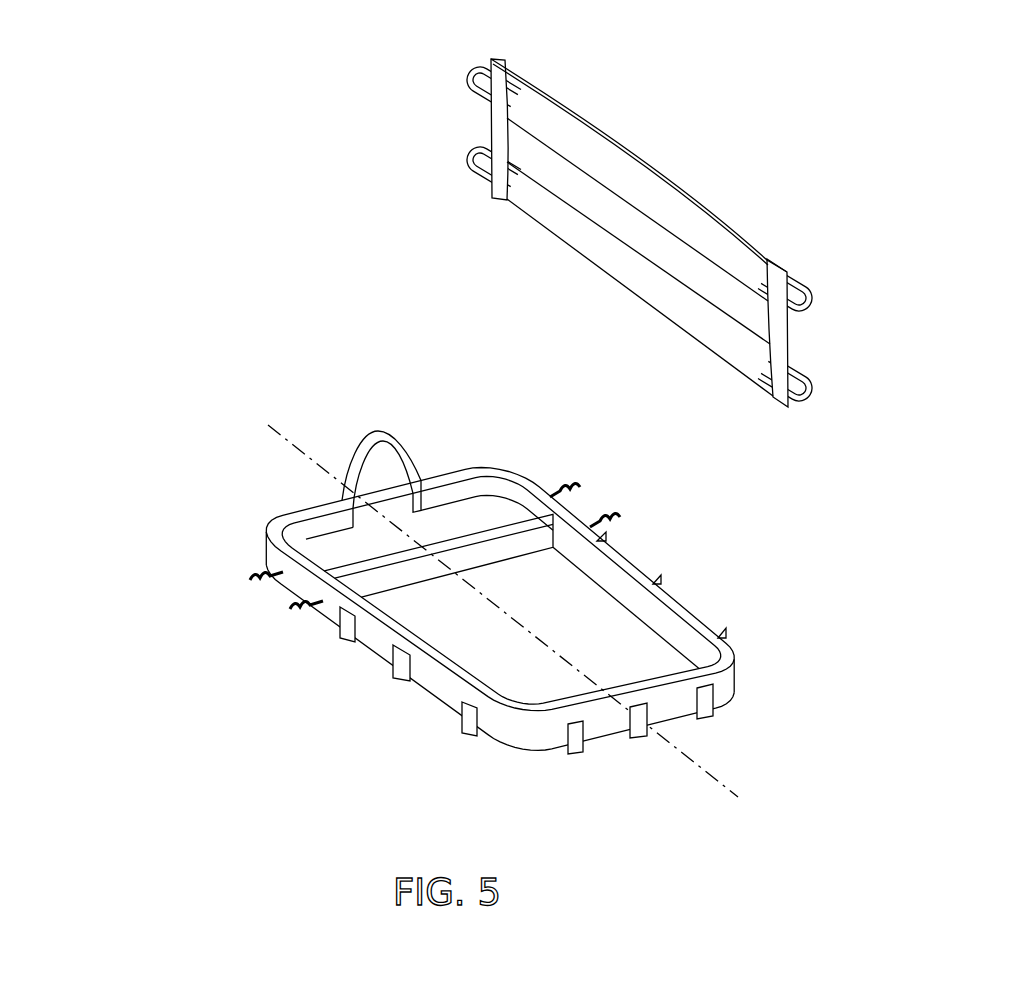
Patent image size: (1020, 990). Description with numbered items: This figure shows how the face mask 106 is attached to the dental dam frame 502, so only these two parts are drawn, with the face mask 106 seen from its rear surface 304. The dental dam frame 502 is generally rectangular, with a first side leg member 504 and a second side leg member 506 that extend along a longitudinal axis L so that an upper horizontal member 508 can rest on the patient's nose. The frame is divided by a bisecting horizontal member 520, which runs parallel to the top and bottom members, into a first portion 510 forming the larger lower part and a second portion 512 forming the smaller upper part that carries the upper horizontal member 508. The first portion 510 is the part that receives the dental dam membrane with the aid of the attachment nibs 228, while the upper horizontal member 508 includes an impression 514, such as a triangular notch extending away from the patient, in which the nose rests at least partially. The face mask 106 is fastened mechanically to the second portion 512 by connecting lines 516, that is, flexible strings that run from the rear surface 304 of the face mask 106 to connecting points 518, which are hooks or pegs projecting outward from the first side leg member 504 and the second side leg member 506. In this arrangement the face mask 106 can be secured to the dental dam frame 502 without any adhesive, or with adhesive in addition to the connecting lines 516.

The face mask 106 is at (637, 219).
The rear surface 304 is at (580, 240).
The connecting line 516 is at (467, 77).
The dental dam frame 502 is at (397, 590).
The first side leg member 504 is at (388, 650).
The second side leg member 506 is at (678, 607).
The upper horizontal member 508 is at (310, 502).
The first portion 510 is at (478, 667).
The second portion 512 is at (328, 540).
The impression 514 is at (372, 430).
The connecting point 518 is at (630, 490).
The bisecting horizontal member 520 is at (481, 536).
The attachment nibs 228 is at (470, 737).
The longitudinal axis L is at (304, 452).